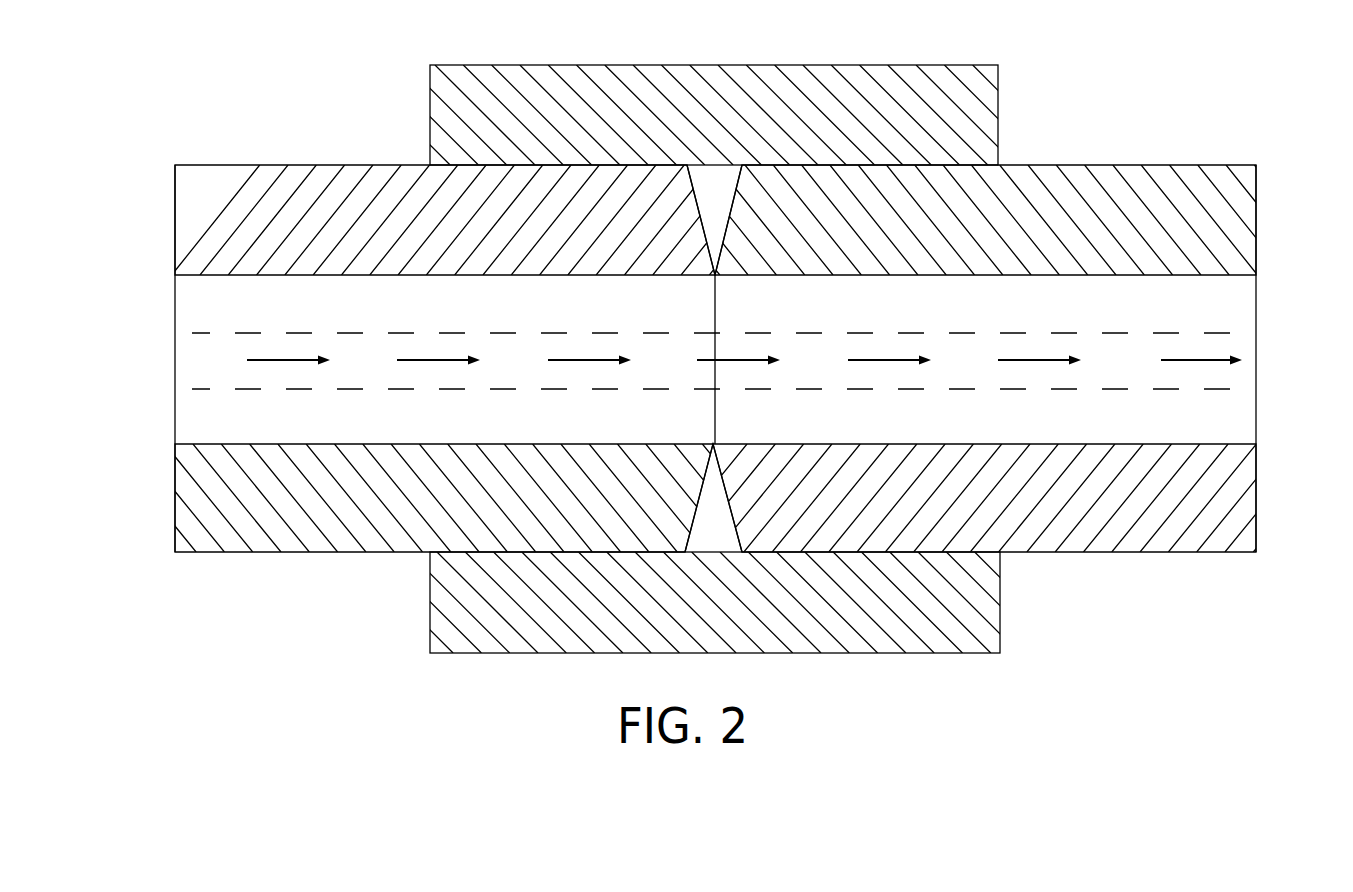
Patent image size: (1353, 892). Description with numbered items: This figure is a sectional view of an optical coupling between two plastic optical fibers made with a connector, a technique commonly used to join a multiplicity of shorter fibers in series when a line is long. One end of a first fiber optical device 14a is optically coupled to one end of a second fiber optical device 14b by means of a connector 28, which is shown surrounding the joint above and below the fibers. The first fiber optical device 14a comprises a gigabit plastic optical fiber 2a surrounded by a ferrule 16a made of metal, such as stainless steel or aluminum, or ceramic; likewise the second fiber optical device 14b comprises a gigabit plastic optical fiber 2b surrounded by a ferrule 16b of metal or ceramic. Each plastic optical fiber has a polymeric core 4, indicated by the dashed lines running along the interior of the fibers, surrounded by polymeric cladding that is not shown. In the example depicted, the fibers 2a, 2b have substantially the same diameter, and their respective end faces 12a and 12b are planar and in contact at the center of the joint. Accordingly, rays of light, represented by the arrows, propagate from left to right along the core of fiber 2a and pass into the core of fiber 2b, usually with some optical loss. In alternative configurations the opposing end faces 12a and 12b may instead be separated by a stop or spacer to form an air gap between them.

The gigabit plastic optical fiber 2a is at (172, 393).
The gigabit plastic optical fiber 2b is at (1260, 322).
The first fiber optical device 14a is at (150, 476).
The second fiber optical device 14b is at (1272, 228).
The ferrule 16a is at (237, 517).
The ferrule 16b is at (1147, 197).
The end face 12a is at (710, 415).
The end face 12b is at (713, 325).
The connector 28 is at (935, 65).
The polymeric core 4 is at (395, 322).